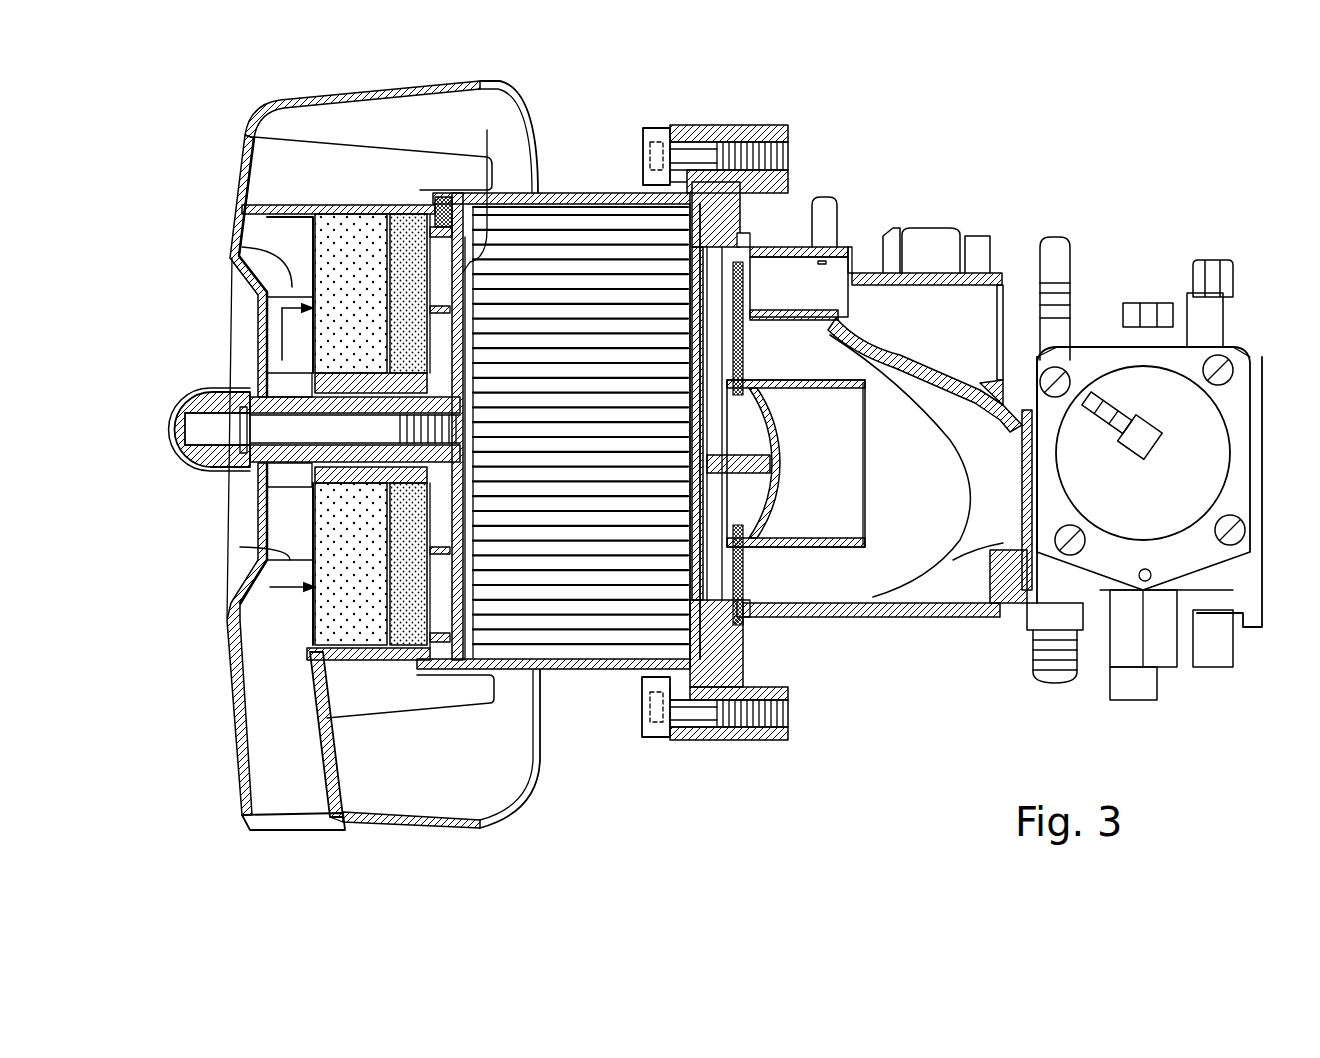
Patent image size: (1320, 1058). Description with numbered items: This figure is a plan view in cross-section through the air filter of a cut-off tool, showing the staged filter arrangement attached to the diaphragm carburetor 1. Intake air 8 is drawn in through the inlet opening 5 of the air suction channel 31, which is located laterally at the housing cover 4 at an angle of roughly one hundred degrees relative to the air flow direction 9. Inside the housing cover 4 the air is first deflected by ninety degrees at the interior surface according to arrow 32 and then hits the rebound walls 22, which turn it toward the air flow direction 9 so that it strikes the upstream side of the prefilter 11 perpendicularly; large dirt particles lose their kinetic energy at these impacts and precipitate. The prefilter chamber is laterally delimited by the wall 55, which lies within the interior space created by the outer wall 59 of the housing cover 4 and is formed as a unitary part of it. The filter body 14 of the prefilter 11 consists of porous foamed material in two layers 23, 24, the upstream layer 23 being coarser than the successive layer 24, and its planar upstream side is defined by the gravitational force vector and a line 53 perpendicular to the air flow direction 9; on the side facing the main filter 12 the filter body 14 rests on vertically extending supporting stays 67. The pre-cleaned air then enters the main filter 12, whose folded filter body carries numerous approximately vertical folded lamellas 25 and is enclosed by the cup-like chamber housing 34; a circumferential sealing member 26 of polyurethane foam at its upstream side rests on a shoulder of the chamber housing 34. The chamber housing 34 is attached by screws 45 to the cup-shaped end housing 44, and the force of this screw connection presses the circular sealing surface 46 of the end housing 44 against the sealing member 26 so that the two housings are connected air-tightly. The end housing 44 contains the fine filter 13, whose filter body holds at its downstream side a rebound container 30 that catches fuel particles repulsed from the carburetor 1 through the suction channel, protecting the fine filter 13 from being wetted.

The carburetor 1 is at (1266, 321).
The housing cover 4 is at (232, 680).
The inlet opening 5 is at (270, 826).
The intake air 8 is at (297, 842).
The air flow direction 9 is at (282, 308).
The prefilter 11 is at (362, 216).
The main filter 12 is at (594, 212).
The fine filter 13 is at (756, 293).
The filter body 14 is at (327, 240).
The rebound walls 22 is at (290, 256).
The layer 23 is at (342, 633).
The layer 24 is at (400, 640).
The folded lamellas 25 is at (600, 600).
The sealing member 26 is at (740, 217).
The rebound container 30 is at (815, 546).
The air suction channel 31 is at (268, 735).
The arrow 32 is at (250, 635).
The chamber housing 34 is at (560, 193).
The end housing 44 is at (888, 618).
The screws 45 is at (654, 130).
The sealing surface 46 is at (750, 233).
The line 53 is at (282, 330).
The wall 55 is at (298, 205).
The outer wall 59 is at (364, 95).
The supporting stays 67 is at (450, 197).